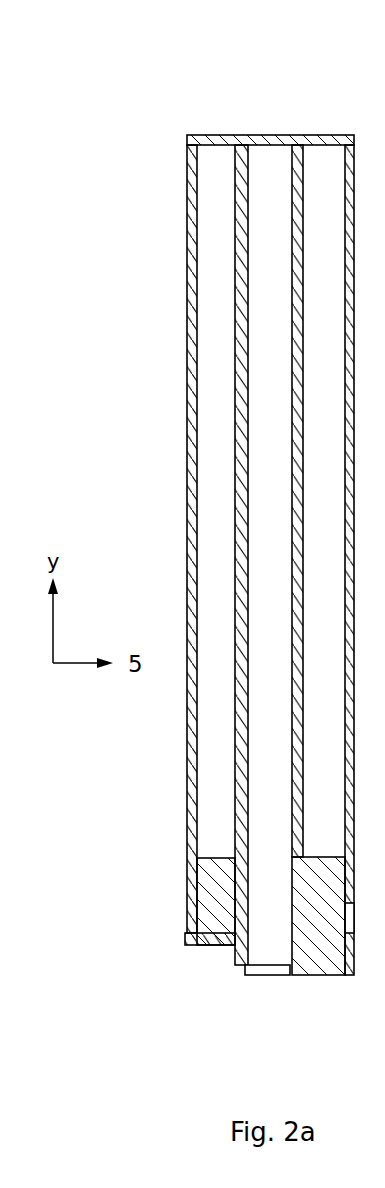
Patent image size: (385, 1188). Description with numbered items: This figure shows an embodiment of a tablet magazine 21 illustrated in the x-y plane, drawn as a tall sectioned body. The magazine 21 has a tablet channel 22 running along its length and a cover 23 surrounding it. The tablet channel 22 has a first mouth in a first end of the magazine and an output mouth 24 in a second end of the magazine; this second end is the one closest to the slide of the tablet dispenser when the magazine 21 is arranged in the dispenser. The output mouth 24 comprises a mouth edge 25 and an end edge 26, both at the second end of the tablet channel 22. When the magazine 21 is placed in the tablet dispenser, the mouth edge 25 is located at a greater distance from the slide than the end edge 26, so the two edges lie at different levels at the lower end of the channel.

The tablet magazine 21 is at (178, 128).
The tablet channel 22 is at (255, 788).
The cover 23 is at (195, 442).
The output mouth 24 is at (276, 972).
The mouth edge 25 is at (185, 935).
The end edge 26 is at (312, 974).